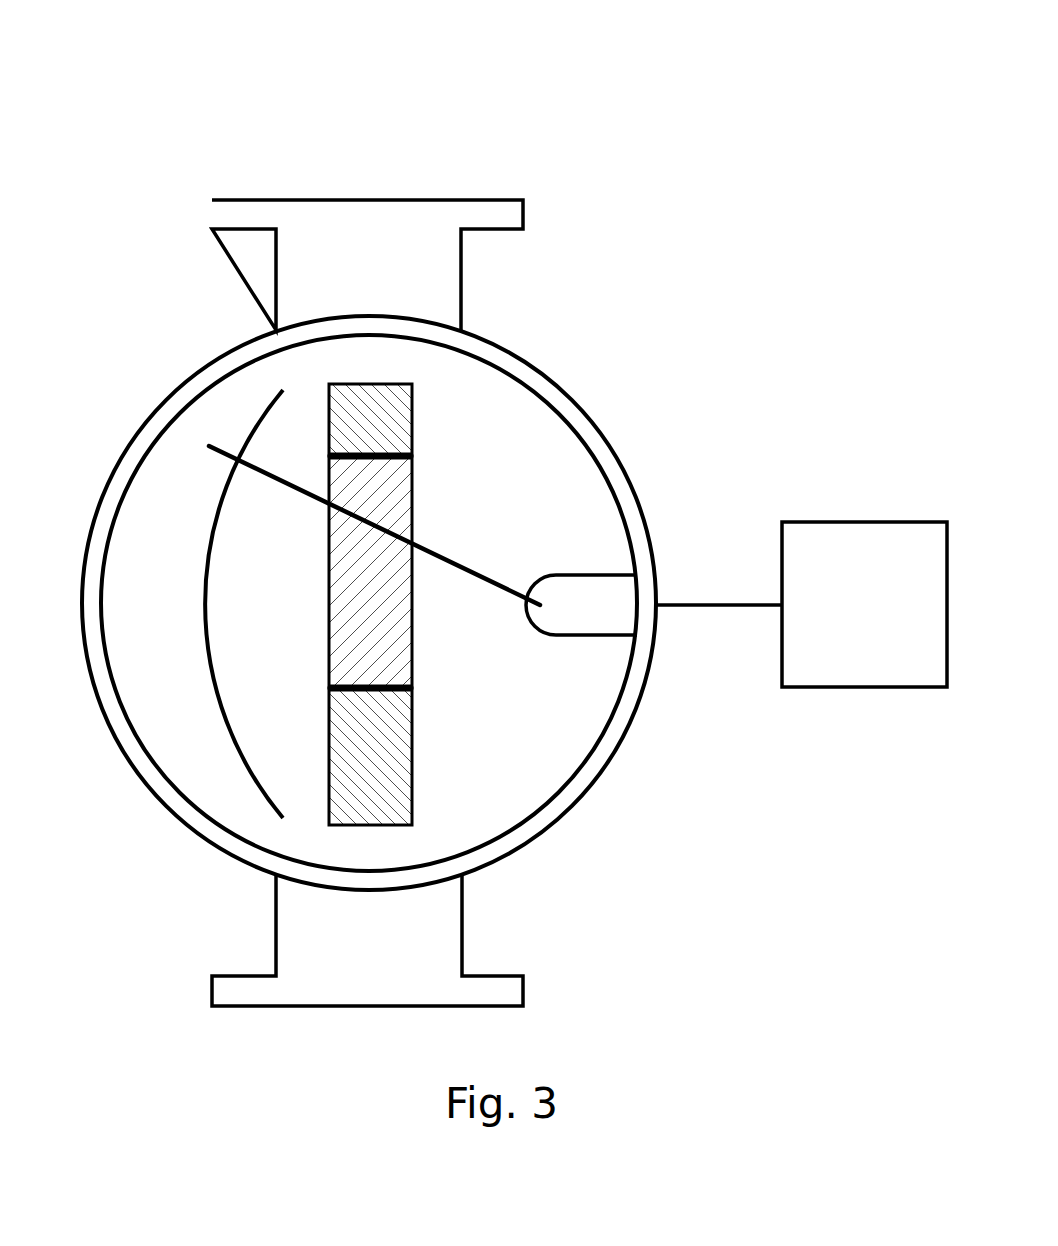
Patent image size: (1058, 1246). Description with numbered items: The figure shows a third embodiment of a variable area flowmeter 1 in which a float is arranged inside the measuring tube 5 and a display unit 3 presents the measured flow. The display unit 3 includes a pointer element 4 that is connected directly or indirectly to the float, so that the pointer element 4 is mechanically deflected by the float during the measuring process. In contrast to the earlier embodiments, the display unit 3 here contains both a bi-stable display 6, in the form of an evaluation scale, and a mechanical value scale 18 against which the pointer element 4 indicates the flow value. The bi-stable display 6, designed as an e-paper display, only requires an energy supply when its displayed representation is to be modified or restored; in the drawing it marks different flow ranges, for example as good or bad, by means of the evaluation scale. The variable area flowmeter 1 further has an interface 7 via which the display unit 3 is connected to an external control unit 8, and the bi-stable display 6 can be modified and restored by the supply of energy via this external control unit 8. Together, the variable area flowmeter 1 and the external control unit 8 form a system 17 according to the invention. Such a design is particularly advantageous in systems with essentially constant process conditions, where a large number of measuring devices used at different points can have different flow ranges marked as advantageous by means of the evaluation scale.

The variable area flowmeter 1 is at (102, 117).
The display unit 3 is at (490, 340).
The pointer element 4 is at (487, 583).
The measuring tube 5 is at (463, 934).
The bi-stable display 6 is at (414, 492).
The interface 7 is at (667, 588).
The external control unit 8 is at (872, 687).
The system 17 is at (845, 330).
The mechanical value scale 18 is at (185, 658).